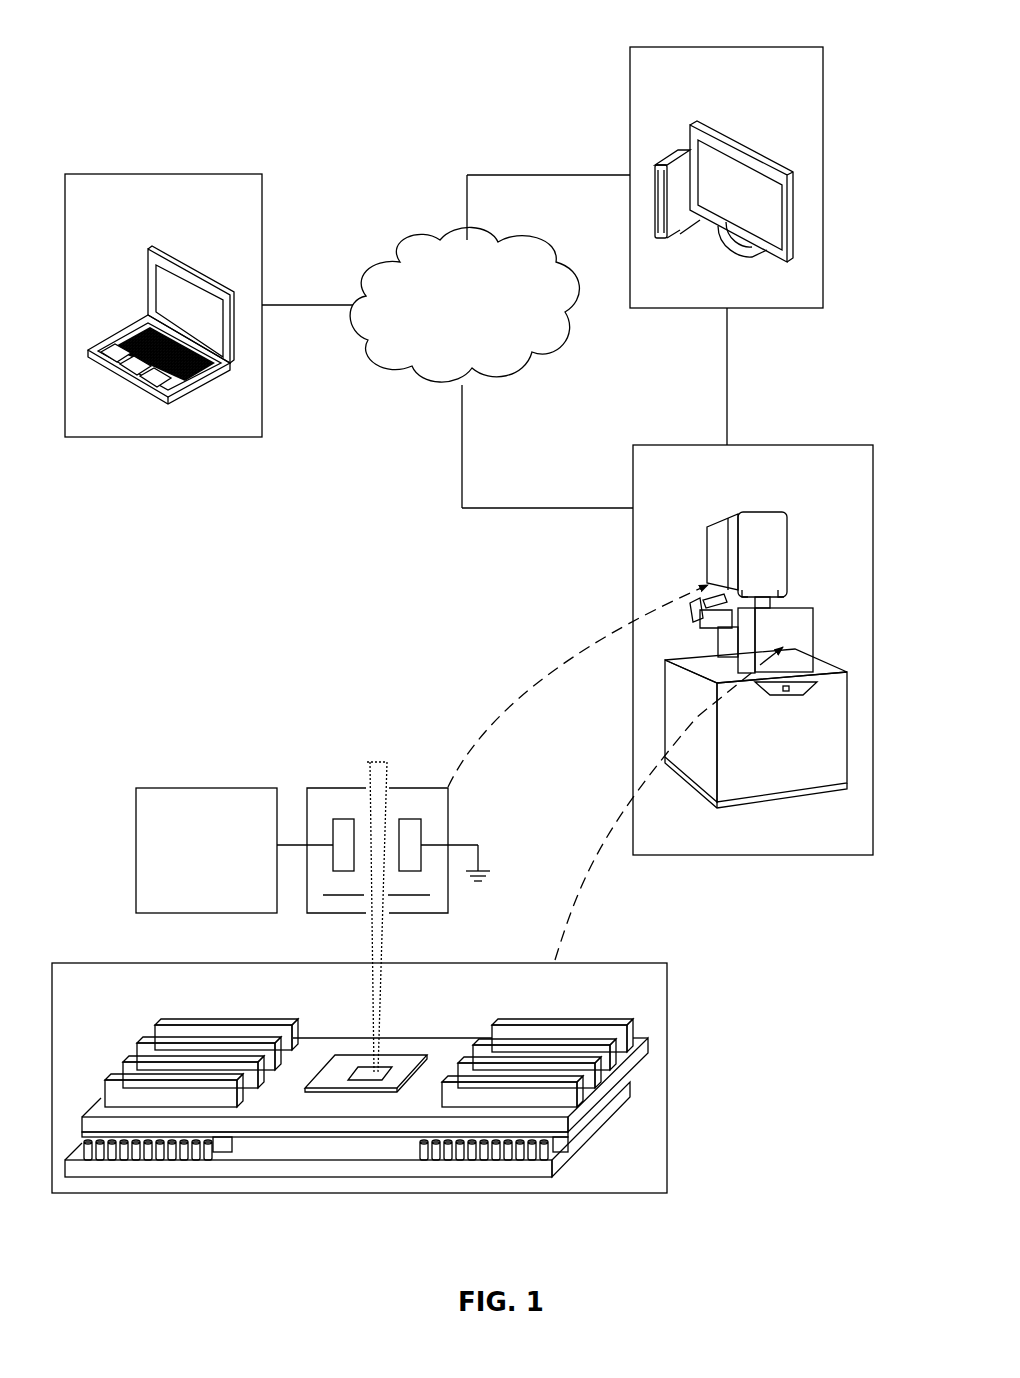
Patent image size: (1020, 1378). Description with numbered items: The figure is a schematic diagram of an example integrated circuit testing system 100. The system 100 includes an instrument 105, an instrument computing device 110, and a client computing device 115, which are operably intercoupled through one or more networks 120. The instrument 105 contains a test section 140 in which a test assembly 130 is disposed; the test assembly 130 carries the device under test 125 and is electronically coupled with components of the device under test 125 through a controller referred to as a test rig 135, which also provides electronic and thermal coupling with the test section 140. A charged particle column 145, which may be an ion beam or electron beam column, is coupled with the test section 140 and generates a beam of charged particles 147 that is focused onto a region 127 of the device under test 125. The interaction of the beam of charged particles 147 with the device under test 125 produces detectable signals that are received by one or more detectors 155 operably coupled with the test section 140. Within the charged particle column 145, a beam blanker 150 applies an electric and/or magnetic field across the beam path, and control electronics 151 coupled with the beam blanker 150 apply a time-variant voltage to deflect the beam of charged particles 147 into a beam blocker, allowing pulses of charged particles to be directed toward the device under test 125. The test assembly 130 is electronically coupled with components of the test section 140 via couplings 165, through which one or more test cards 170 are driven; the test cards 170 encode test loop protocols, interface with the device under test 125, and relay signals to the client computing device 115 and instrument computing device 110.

The integrated circuit testing system 100 is at (106, 44).
The instrument 105 is at (737, 838).
The instrument computing device 110 is at (711, 300).
The client computing device 115 is at (147, 426).
The networks 120 is at (449, 333).
The device under test 125 is at (347, 1057).
The region of the DUT 127 is at (385, 1066).
The test assembly 130 is at (633, 1067).
The test rig 135 is at (280, 1167).
The test section 140 is at (813, 627).
The charged particle column 145 is at (787, 535).
The beam of charged particles 147 is at (367, 762).
The beam blanker 150 is at (337, 788).
The control electronics 151 is at (191, 855).
The detectors 155 is at (693, 618).
The couplings 165 is at (175, 1160).
The test cards 170 is at (624, 1026).